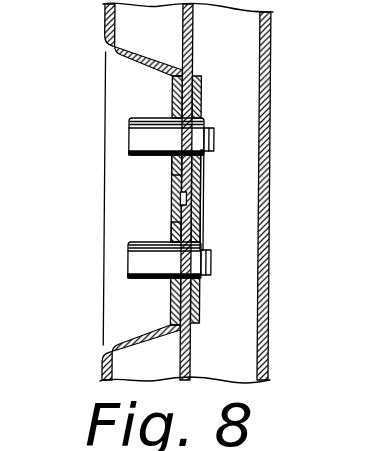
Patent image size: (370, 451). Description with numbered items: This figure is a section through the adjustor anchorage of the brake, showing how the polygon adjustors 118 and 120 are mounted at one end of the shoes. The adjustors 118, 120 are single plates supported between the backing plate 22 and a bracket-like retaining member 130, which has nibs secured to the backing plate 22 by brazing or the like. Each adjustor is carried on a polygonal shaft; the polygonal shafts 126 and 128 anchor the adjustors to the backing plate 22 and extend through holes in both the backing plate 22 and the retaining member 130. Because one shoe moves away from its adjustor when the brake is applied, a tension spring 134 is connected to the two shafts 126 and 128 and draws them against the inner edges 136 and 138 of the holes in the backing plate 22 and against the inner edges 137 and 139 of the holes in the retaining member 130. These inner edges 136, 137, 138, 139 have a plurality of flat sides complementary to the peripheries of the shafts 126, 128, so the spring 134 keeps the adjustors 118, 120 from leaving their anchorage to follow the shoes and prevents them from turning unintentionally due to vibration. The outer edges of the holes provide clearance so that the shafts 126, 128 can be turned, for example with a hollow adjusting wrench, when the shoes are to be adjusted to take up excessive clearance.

The backing plate 22 is at (107, 38).
The polygon adjustor 118 is at (201, 103).
The polygon adjustor 120 is at (203, 218).
The polygonal shaft 126 is at (142, 137).
The polygonal shaft 128 is at (140, 258).
The bracket-like retaining member 130 is at (203, 180).
The tension spring 134 is at (203, 201).
The inner edge of hole in backing plate 136 is at (173, 165).
The inner edge of hole in retaining member 137 is at (207, 167).
The inner edge of hole in backing plate 138 is at (173, 225).
The inner edge of hole in retaining member 139 is at (205, 232).